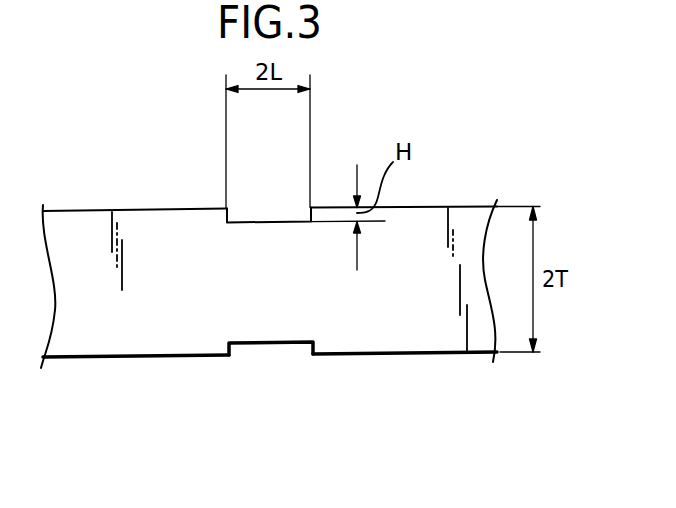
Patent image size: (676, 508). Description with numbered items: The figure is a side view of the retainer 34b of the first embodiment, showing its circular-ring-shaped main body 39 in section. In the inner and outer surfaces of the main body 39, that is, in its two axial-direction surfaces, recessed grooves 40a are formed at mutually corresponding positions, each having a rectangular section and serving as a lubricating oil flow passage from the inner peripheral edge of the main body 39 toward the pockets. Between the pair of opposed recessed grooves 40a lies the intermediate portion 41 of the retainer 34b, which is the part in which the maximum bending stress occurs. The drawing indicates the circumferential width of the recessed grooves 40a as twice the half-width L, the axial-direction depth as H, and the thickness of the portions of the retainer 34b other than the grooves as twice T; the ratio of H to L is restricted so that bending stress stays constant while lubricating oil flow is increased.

The main body 39 is at (73, 230).
The intermediate portion 41 is at (392, 335).
The retainer 34b is at (114, 335).
The recessed groove 40a is at (296, 222).